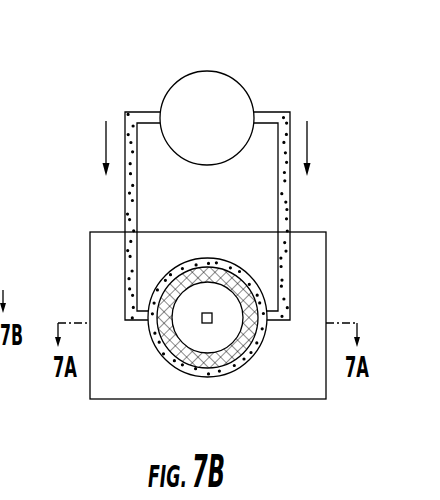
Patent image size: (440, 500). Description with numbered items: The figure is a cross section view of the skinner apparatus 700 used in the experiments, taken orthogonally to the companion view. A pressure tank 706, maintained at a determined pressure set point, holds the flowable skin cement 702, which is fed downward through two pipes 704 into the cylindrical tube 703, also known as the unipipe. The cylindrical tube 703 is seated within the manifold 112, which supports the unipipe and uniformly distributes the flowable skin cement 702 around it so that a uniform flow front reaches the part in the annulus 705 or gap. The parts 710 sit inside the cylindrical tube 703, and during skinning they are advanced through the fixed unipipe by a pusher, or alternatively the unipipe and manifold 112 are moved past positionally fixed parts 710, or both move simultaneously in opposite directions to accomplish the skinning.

The skinner apparatus 700 is at (85, 120).
The flowable skin cement 702 is at (285, 210).
The pipe 704 is at (137, 112).
The pressure tank 706 is at (208, 80).
The manifold 112 is at (88, 282).
The cylindrical tube 703 is at (232, 370).
The annulus 705 is at (263, 338).
The parts 710 is at (195, 362).